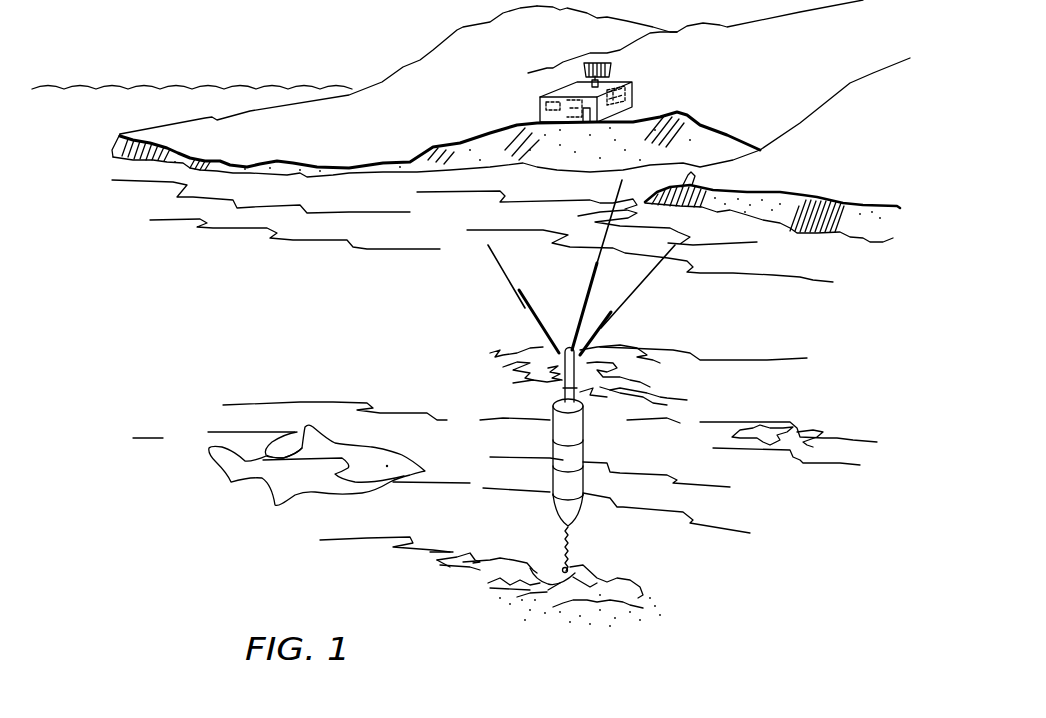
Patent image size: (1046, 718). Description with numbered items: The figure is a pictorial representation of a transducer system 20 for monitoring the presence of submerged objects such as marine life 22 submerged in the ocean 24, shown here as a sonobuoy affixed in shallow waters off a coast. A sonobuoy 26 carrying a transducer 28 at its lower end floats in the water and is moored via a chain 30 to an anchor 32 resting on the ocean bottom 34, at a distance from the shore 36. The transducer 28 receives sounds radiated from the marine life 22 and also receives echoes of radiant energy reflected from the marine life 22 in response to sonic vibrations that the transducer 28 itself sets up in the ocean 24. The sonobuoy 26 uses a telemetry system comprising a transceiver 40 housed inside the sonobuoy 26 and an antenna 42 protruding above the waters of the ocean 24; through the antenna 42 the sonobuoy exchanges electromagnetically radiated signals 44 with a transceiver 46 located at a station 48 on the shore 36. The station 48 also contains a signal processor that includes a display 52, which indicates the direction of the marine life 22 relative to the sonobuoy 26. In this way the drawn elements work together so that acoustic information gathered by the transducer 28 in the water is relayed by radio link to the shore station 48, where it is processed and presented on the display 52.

The transducer system 20 is at (163, 552).
The marine life 22 is at (305, 490).
The ocean 24 is at (307, 310).
The sonobuoy 26 is at (622, 432).
The transducer 28 is at (577, 512).
The chain 30 is at (571, 543).
The anchor 32 is at (565, 573).
The ocean bottom 34 is at (690, 620).
The shore 36 is at (357, 151).
The transceiver 40 is at (583, 420).
The antenna 42 is at (578, 356).
The electromagnetically radiated signals 44 is at (652, 270).
The transceiver 46 is at (587, 93).
The station 48 is at (548, 92).
The display 52 is at (636, 93).